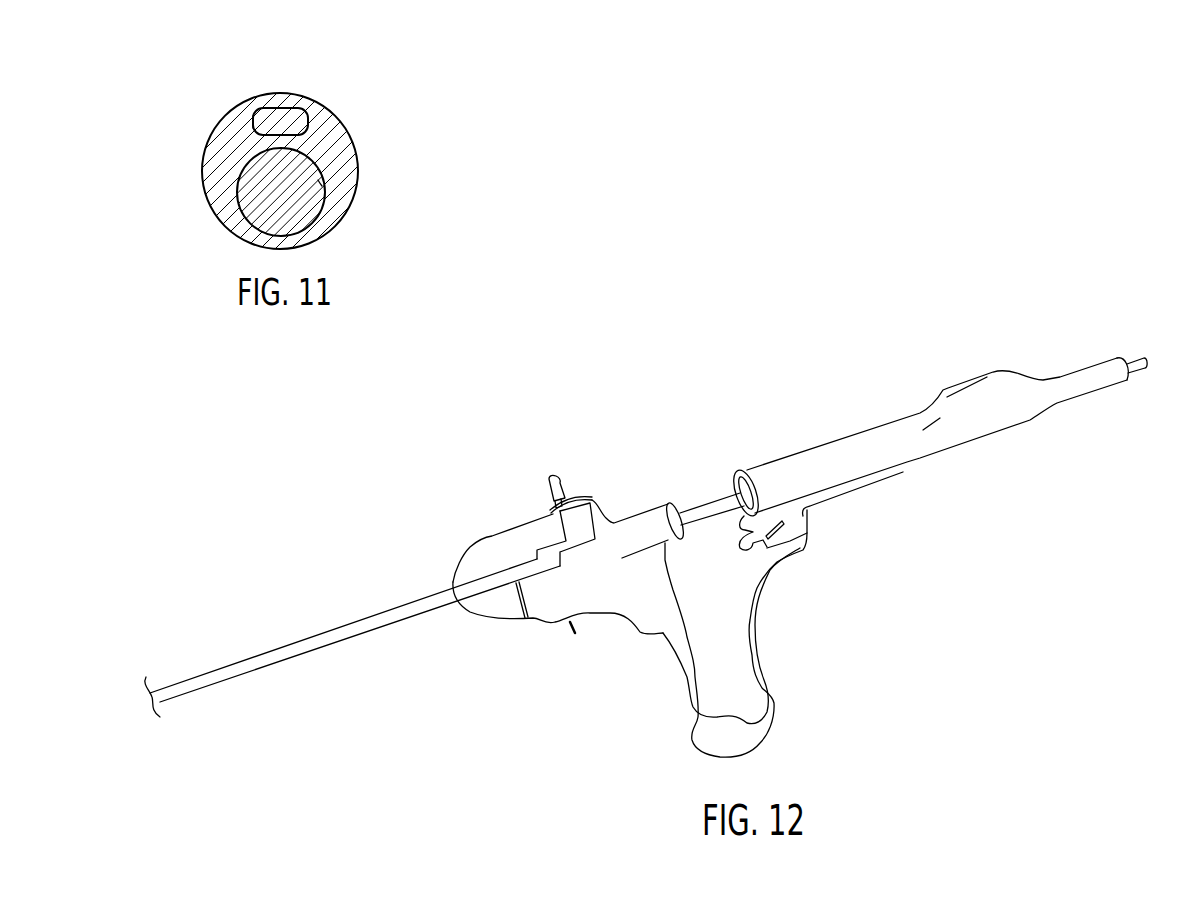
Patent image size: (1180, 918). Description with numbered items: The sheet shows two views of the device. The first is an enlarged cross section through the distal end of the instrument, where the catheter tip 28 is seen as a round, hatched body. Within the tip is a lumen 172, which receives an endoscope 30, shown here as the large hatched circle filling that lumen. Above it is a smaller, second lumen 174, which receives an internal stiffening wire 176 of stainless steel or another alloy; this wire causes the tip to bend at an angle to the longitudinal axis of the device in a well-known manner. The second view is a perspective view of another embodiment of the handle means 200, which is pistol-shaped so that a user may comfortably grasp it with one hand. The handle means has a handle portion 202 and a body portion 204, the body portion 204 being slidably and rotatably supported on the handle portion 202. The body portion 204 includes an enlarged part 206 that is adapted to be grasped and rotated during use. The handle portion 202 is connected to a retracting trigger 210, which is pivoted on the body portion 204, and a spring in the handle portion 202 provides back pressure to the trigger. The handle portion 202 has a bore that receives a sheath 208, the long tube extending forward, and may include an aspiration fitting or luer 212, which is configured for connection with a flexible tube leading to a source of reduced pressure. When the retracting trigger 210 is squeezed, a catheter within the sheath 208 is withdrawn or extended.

In FIG. 11, the catheter tip 28 is at (332, 135).
In FIG. 11, the endoscope 30 is at (255, 213).
In FIG. 11, the lumen 172 is at (318, 177).
In FIG. 11, the second lumen 174 is at (300, 109).
In FIG. 11, the internal stiffening wire 176 is at (253, 123).
In FIG. 12, the handle means 200 is at (792, 398).
In FIG. 12, the handle portion 202 is at (490, 533).
In FIG. 12, the body portion 204 is at (857, 436).
In FIG. 12, the enlarged part 206 is at (983, 370).
In FIG. 12, the sheath 208 is at (338, 628).
In FIG. 12, the retracting trigger 210 is at (757, 648).
In FIG. 12, the aspiration fitting or luer 212 is at (530, 620).